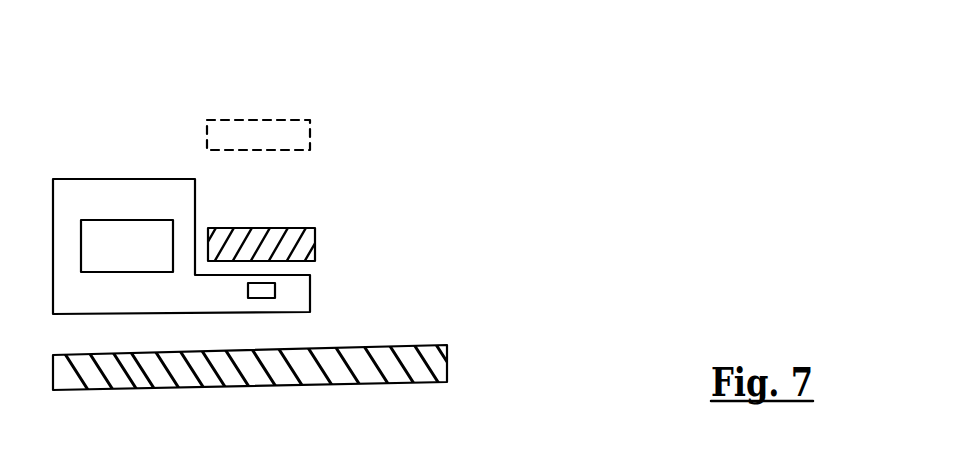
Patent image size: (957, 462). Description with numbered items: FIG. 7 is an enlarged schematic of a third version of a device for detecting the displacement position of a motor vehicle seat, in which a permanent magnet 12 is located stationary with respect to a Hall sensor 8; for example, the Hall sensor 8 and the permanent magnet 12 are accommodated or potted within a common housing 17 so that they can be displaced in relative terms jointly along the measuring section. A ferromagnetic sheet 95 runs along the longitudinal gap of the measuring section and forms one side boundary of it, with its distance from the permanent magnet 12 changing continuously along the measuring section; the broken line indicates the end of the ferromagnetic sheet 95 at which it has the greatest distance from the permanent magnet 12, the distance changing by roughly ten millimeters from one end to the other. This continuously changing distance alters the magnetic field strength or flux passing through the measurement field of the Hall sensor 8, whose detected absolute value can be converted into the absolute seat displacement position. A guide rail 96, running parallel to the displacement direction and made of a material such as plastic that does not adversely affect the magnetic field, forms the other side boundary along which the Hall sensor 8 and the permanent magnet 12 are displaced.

The common housing 17 is at (65, 175).
The permanent magnet 12 is at (130, 217).
The ferromagnetic sheet 95 is at (310, 124).
The Hall sensor 8 is at (275, 292).
The guide rail 96 is at (450, 345).